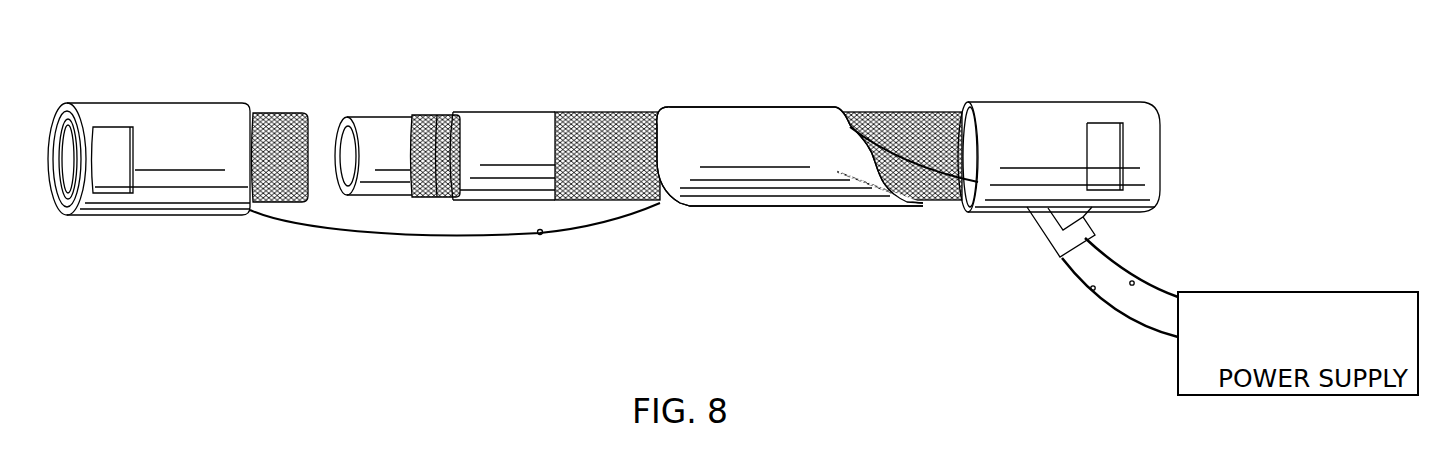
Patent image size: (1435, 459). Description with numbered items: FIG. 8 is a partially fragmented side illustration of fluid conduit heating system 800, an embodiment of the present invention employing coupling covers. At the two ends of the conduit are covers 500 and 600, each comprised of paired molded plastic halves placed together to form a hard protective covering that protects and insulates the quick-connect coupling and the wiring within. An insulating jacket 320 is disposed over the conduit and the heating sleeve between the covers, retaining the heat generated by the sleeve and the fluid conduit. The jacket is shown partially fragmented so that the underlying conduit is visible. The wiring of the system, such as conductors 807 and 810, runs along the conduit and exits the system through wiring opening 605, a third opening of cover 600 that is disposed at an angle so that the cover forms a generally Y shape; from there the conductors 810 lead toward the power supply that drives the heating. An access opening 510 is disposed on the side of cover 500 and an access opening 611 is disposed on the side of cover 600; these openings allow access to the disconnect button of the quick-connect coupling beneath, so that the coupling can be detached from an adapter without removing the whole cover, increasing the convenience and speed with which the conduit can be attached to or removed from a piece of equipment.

The cover 500 is at (224, 224).
The access opening 510 is at (110, 194).
The insulating jacket 320 is at (797, 214).
The fluid conduit heating system 800 is at (814, 87).
The conductor 807 is at (541, 236).
The cover 600 is at (1054, 86).
The access opening 611 is at (1135, 147).
The wiring opening 605 is at (1021, 246).
The conductor 810 is at (1091, 291).